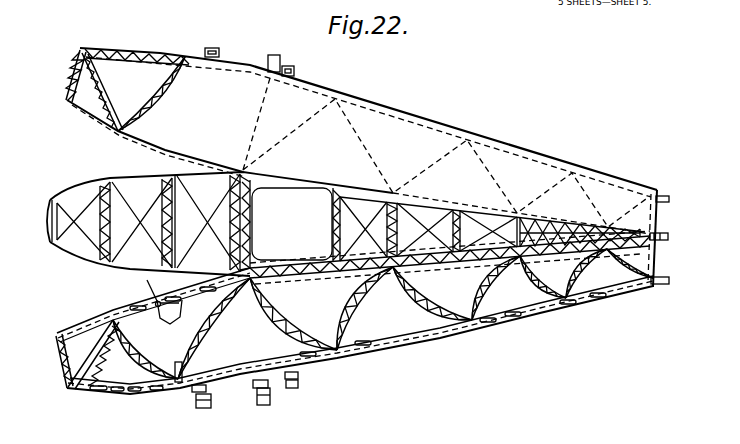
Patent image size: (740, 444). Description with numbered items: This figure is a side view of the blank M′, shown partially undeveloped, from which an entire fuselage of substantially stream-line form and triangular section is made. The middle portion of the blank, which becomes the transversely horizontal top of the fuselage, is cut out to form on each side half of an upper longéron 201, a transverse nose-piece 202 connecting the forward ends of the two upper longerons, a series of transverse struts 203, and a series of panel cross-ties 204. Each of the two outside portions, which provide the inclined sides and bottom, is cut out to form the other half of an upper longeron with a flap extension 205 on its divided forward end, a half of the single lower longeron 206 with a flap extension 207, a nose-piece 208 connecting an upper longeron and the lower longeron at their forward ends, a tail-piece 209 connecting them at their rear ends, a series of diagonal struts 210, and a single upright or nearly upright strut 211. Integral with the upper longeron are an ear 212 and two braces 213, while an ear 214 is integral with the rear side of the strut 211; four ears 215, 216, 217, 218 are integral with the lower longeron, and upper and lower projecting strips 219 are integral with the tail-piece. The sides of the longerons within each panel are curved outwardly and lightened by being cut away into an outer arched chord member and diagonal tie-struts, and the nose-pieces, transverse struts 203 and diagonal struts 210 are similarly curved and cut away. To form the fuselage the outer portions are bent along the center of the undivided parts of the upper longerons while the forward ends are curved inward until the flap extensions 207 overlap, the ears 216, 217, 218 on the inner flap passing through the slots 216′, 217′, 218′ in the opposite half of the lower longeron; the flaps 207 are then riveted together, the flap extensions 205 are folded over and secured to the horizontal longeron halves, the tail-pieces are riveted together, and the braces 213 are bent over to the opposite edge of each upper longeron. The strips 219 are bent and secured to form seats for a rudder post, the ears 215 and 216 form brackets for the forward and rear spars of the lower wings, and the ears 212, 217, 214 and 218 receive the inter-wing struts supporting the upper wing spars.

The upper longéron 201 is at (97, 182).
The transverse nose-piece 202 is at (54, 213).
The transverse strut 203 is at (178, 212).
The panel cross-tie 204 is at (152, 214).
The flap extension 205 is at (91, 126).
The lower longeron 206 is at (155, 47).
The flap extension 207 is at (182, 55).
The nose-piece 208 is at (72, 60).
The tail-piece 209 is at (658, 214).
The diagonal strut 210 is at (135, 90).
The upright strut 211 is at (262, 108).
The ear 212 is at (140, 291).
The brace 213 is at (170, 322).
The ear 214 is at (266, 265).
The ear 215 is at (172, 392).
The ear 216 is at (268, 403).
The slot 216′ is at (257, 392).
The ear 217 is at (213, 407).
The slot 217′ is at (197, 410).
The ear 218 is at (288, 385).
The slot 218′ is at (293, 377).
The projecting strip 219 is at (664, 198).
The blank M′ is at (422, 114).